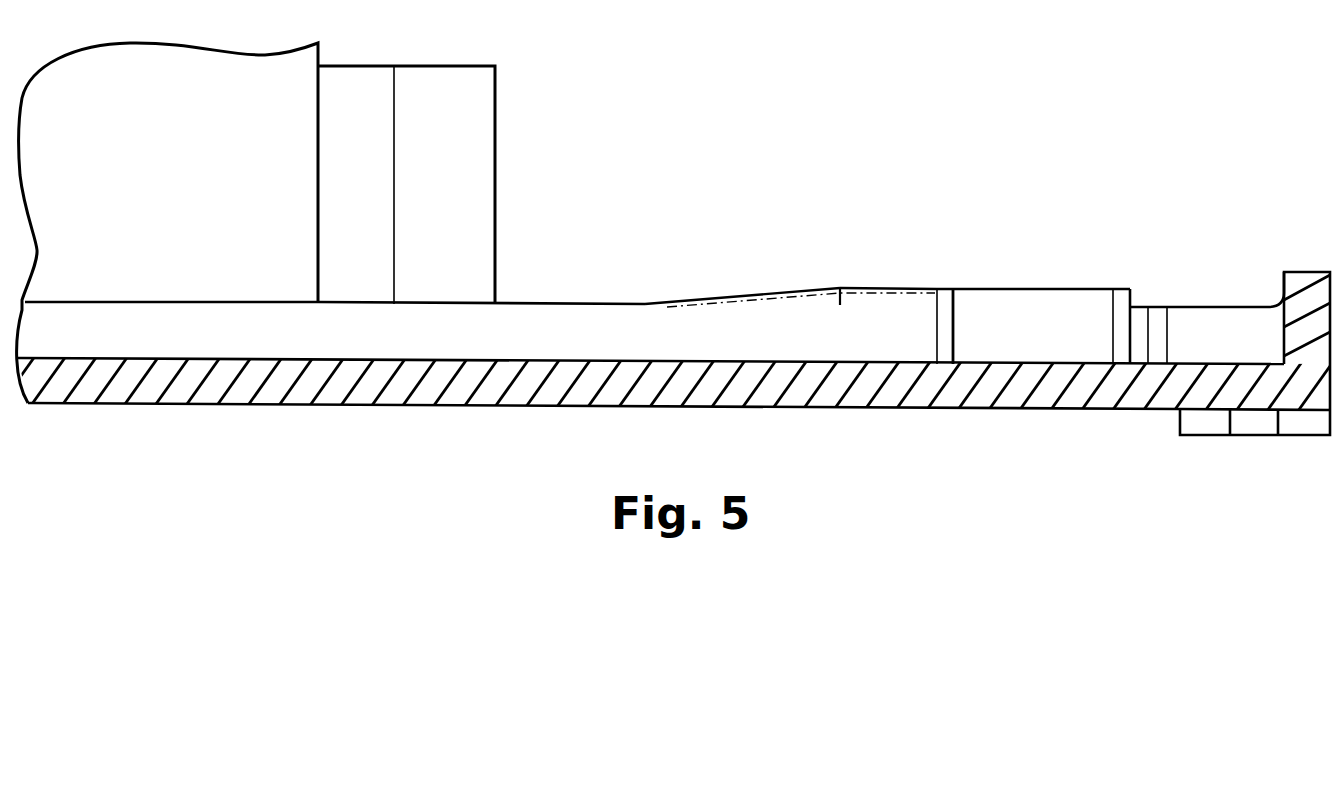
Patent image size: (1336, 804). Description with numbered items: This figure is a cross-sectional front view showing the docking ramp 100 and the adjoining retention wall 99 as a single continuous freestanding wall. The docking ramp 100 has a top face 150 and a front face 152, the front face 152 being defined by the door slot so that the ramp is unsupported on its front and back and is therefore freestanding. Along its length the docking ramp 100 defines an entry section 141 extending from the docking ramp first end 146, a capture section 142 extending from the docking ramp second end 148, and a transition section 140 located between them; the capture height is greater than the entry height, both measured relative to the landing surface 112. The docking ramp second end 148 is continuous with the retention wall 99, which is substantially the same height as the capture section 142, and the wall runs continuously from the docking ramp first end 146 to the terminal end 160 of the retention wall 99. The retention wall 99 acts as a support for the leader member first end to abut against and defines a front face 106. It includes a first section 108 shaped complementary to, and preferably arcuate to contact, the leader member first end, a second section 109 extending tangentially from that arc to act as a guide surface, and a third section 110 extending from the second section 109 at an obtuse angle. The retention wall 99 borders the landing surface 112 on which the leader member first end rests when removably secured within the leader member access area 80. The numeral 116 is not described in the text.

The leader member access area 80 is at (1196, 56).
The retention wall 99 is at (1004, 270).
The docking ramp 100 is at (744, 245).
The front face 106 is at (1052, 319).
The first section 108 is at (1077, 298).
The second section 109 is at (953, 312).
The third section 110 is at (940, 352).
The landing surface 112 is at (1020, 363).
The ramp top surface 116 is at (975, 290).
The transition section 140 is at (720, 308).
The entry section 141 is at (620, 314).
The capture section 142 is at (875, 308).
The docking ramp first end 146 is at (538, 304).
The docking ramp second end 148 is at (937, 289).
The top face 150 is at (772, 292).
The front face 152 is at (759, 344).
The terminal end 160 is at (1123, 303).